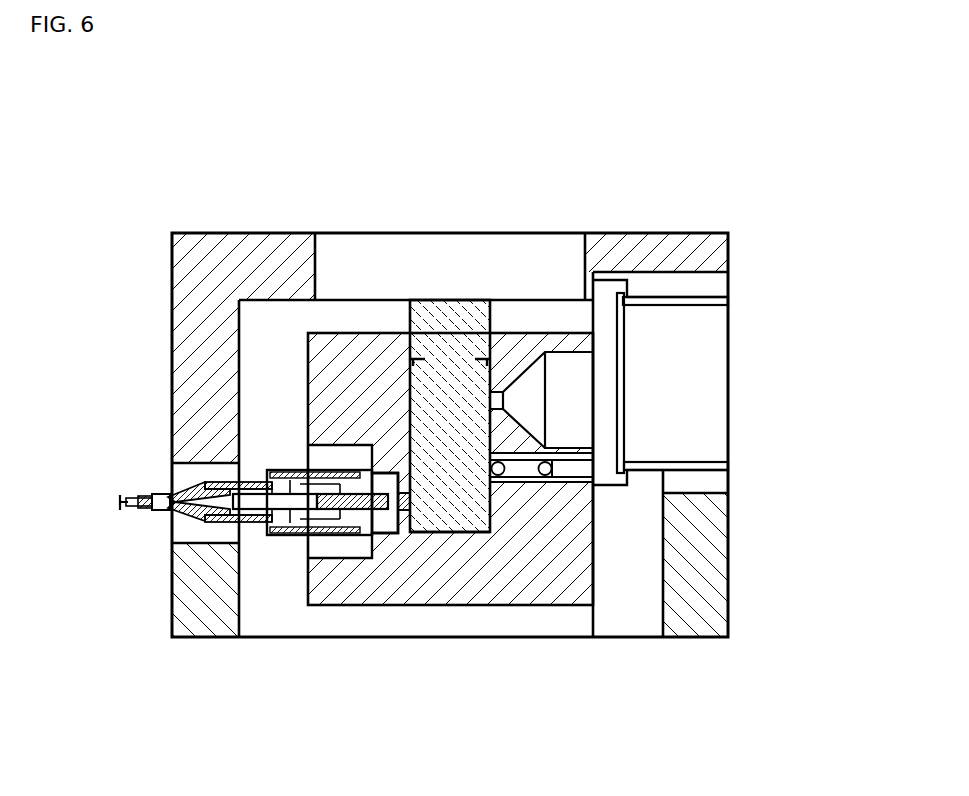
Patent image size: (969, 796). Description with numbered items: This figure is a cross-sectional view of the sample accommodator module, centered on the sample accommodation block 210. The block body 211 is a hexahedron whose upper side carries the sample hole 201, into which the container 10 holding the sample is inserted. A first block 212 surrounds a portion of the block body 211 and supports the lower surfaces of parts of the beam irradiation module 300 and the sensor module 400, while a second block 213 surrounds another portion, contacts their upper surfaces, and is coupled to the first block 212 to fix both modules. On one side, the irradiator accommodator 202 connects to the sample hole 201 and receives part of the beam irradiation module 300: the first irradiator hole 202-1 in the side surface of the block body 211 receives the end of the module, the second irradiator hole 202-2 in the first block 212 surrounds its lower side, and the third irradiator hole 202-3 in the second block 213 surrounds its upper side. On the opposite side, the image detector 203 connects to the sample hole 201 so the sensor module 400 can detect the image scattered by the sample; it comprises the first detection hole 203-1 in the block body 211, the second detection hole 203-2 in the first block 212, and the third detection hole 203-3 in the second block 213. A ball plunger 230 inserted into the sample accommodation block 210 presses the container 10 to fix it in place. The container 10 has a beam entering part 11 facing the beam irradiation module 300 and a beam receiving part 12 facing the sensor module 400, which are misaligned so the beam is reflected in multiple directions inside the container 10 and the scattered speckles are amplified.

The sample accommodation block 210 is at (748, 164).
The second block 213 is at (190, 362).
The block body 211 is at (336, 383).
The first block 212 is at (185, 587).
The beam irradiation module 300 is at (181, 487).
The sample hole 201 is at (418, 344).
The container 10 is at (452, 327).
The beam receiving part 12 is at (475, 385).
The beam entering part 11 is at (432, 533).
The ball plunger 230 is at (520, 478).
The sensor module 400 is at (660, 345).
The image detector 203 is at (840, 288).
The first detection hole 203-1 is at (580, 446).
The second detection hole 203-2 is at (695, 497).
The third detection hole 203-3 is at (697, 272).
The irradiator accommodator 202 is at (357, 698).
The first irradiator hole 202-1 is at (340, 550).
The second irradiator hole 202-2 is at (214, 542).
The third irradiator hole 202-3 is at (258, 540).